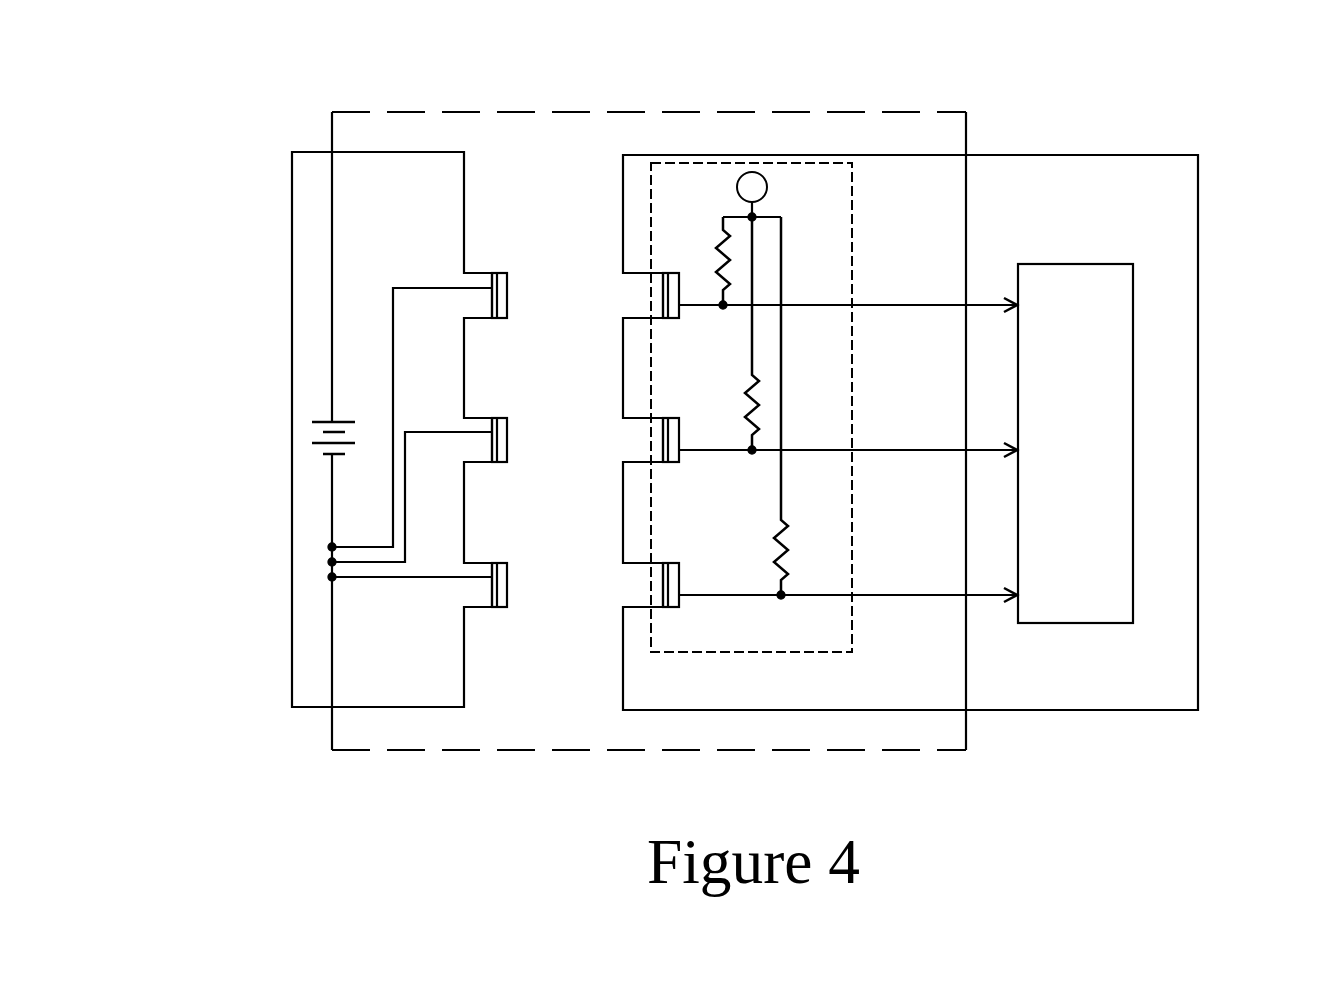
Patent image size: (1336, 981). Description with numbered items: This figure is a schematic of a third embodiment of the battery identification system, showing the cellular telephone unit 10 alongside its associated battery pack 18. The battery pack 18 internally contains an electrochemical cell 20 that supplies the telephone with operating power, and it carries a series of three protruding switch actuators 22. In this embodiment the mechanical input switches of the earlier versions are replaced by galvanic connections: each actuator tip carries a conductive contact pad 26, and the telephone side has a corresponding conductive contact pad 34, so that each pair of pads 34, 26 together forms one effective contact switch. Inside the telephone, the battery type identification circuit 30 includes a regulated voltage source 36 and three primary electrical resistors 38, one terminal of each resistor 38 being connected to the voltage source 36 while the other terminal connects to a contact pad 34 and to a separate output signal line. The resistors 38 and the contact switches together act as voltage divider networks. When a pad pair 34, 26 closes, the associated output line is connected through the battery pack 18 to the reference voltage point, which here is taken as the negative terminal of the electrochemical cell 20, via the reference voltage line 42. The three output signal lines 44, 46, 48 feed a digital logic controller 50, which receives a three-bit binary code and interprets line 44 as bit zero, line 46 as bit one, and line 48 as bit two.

The cellular telephone unit 10 is at (1204, 90).
The battery pack 18 is at (292, 190).
The electrochemical cell 20 is at (322, 422).
The switch actuators 22 is at (477, 272).
The conductive contact pad 26 is at (498, 312).
The battery type identification circuit 30 is at (648, 653).
The conductive contact pads 34 is at (672, 283).
The regulated voltage source 36 is at (741, 174).
The primary electrical resistors 38 is at (720, 240).
The reference voltage line 42 is at (332, 607).
The output signal line 44 is at (968, 306).
The output signal line 46 is at (968, 451).
The output signal line 48 is at (965, 596).
The digital logic controller 50 is at (1133, 300).